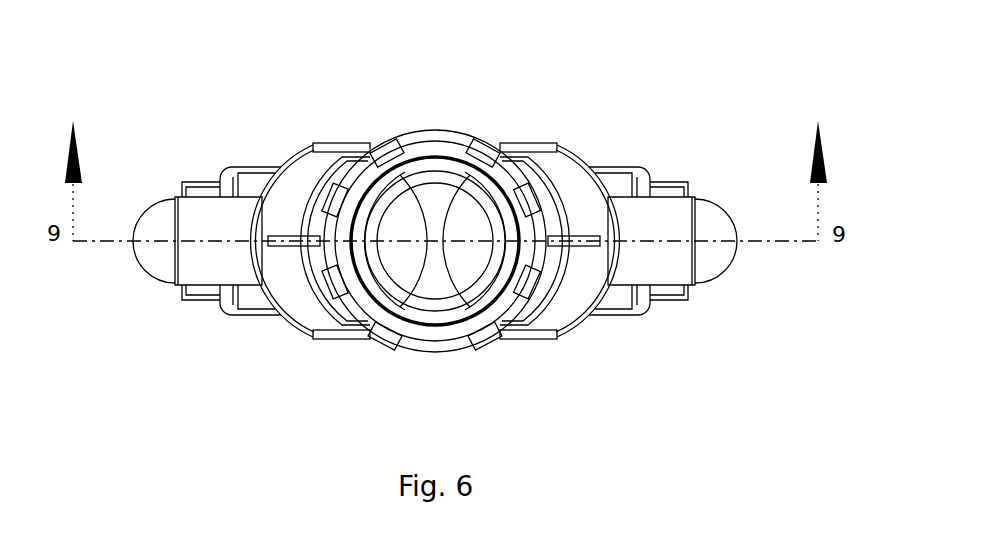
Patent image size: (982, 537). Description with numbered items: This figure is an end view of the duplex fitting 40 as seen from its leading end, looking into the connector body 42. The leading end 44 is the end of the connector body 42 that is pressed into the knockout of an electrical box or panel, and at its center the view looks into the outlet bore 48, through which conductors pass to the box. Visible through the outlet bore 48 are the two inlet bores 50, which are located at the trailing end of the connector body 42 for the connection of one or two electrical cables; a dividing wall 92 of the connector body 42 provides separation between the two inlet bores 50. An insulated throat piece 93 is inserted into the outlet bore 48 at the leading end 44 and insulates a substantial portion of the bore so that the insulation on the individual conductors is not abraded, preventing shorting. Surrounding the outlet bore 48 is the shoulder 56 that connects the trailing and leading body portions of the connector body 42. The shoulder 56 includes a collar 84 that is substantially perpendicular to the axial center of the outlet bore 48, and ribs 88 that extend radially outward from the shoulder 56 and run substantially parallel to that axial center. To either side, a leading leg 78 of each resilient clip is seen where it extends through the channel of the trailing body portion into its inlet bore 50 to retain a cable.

The duplex fitting 40 is at (148, 97).
The connector body 42 is at (485, 342).
The leading end 44 is at (425, 347).
The outlet bore 48 is at (436, 175).
The inlet bores 50 is at (390, 212).
The shoulder 56 is at (320, 297).
The leading leg 78 is at (667, 210).
The collar 84 is at (288, 208).
The ribs 88 is at (577, 248).
The dividing wall 92 is at (440, 287).
The insulated throat piece 93 is at (388, 322).